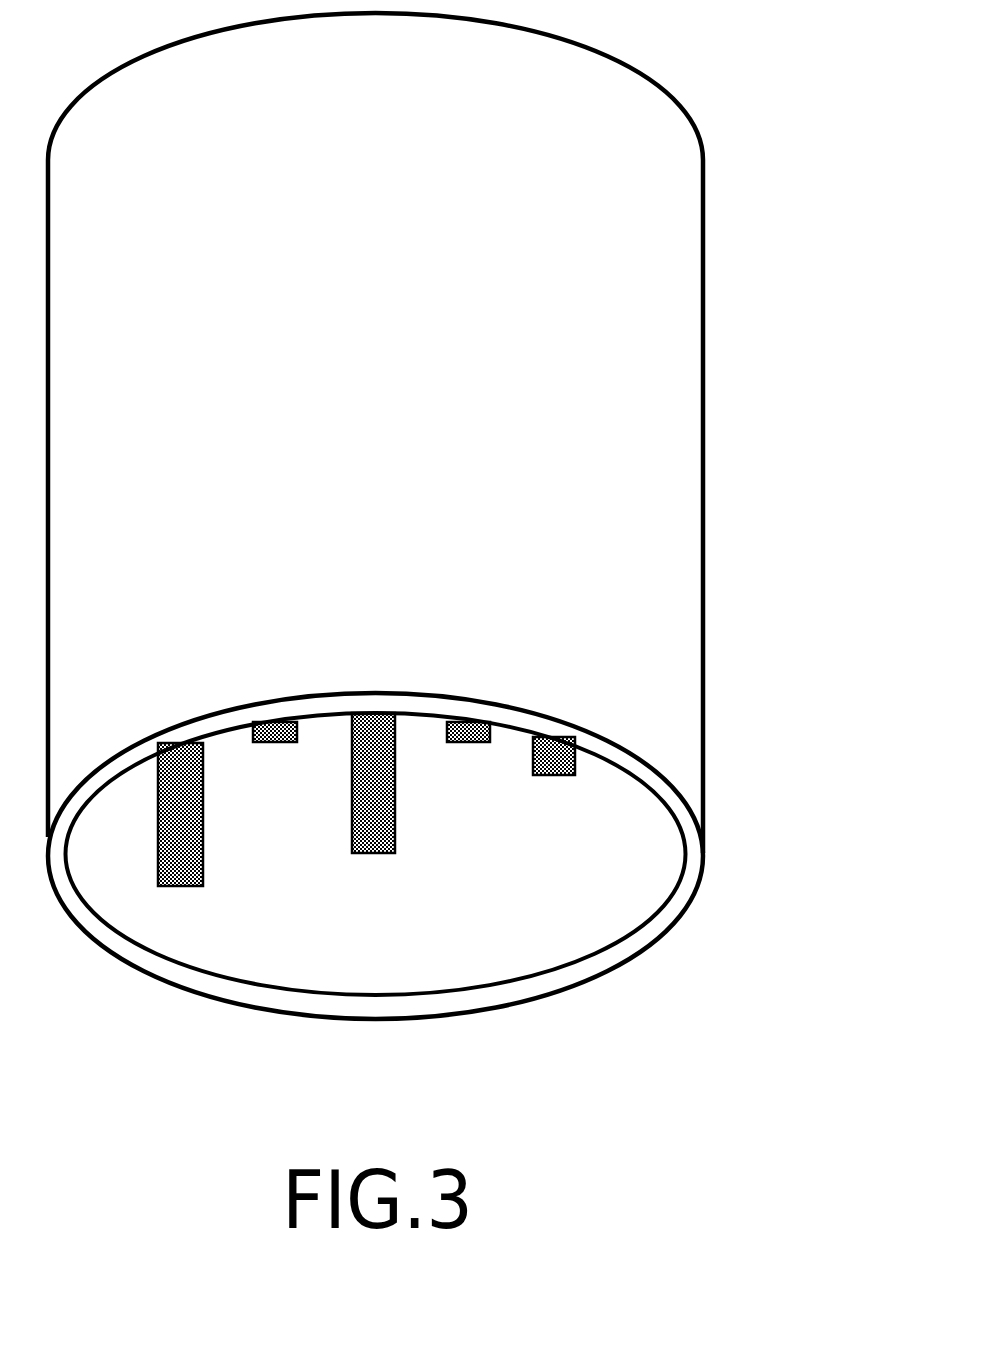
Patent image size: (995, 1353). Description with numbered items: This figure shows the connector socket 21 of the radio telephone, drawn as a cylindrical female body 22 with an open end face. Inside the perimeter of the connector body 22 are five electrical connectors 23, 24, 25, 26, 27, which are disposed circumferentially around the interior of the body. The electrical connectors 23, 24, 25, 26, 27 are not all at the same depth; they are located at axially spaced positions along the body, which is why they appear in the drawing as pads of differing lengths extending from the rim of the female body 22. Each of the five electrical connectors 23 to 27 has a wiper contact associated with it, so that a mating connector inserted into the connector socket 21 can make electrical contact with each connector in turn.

The connector socket 21 is at (468, 516).
The female body 22 is at (398, 431).
The electrical connector 23 is at (273, 723).
The electrical connector 24 is at (467, 722).
The electrical connector 25 is at (182, 886).
The electrical connector 26 is at (370, 853).
The electrical connector 27 is at (555, 775).